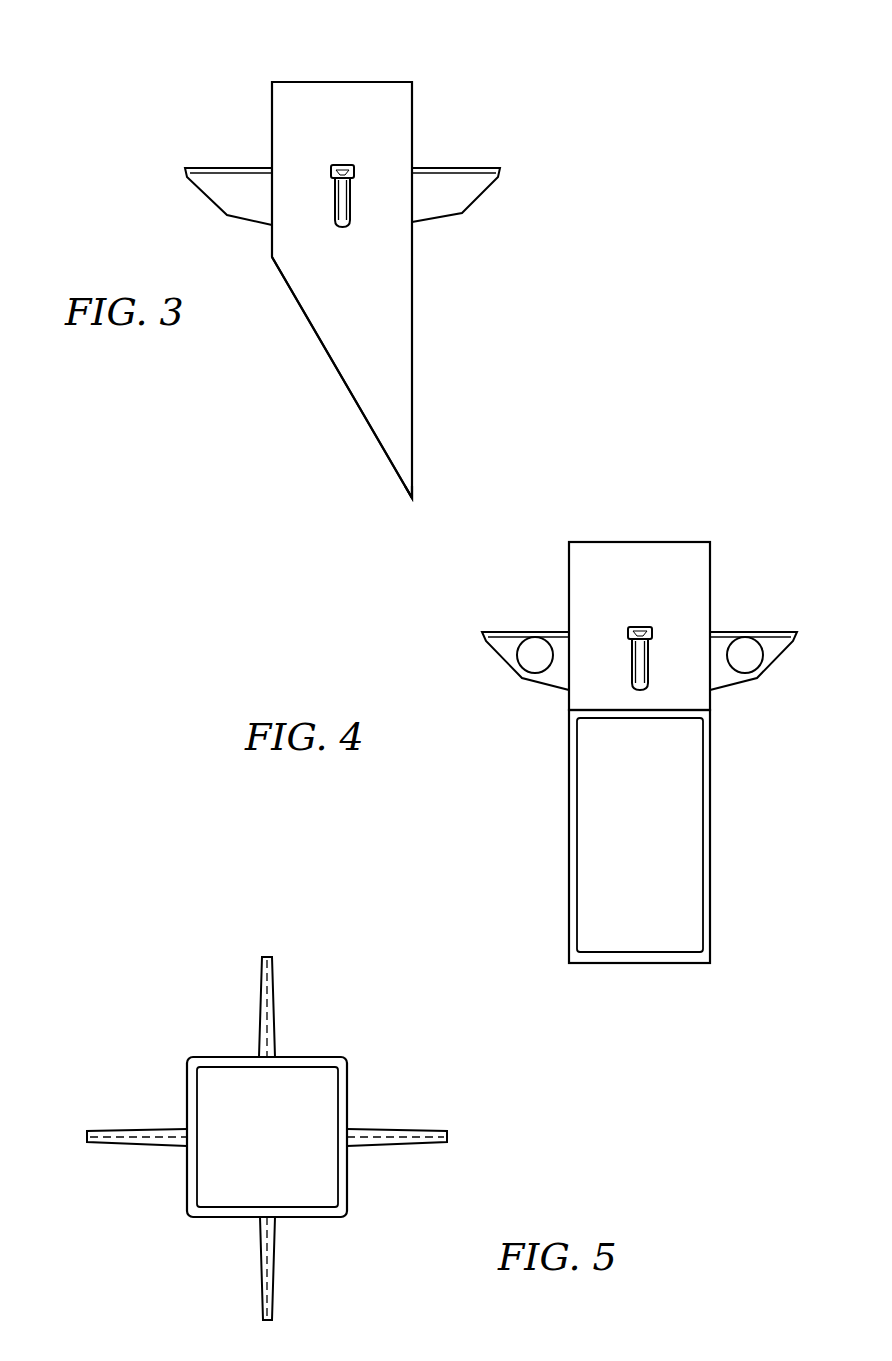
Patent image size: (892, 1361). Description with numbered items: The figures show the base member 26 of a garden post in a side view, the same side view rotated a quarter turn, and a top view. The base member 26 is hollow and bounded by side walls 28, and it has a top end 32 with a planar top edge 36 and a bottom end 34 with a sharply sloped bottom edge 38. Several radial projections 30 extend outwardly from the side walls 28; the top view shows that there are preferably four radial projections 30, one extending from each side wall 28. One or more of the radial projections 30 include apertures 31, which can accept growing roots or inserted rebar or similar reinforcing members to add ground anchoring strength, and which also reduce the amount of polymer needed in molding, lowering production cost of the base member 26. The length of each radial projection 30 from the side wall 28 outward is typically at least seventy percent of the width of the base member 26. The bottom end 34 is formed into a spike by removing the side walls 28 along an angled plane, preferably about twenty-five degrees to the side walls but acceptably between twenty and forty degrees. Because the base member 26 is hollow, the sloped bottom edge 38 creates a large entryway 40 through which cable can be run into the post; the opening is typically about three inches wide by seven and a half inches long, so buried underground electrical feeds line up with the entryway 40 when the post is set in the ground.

In FIG. 3, the base member 26 is at (187, 117).
In FIG. 4, the base member 26 is at (517, 790).
In FIG. 5, the base member 26 is at (168, 1013).
In FIG. 3, the side walls 28 is at (336, 281).
In FIG. 4, the side walls 28 is at (591, 593).
In FIG. 5, the side walls 28 is at (343, 1088).
In FIG. 3, the radial projections 30 is at (472, 183).
In FIG. 4, the radial projections 30 is at (498, 642).
In FIG. 5, the radial projections 30 is at (262, 973).
In FIG. 4, the apertures 31 is at (542, 663).
In FIG. 3, the top end 32 is at (387, 80).
In FIG. 4, the top end 32 is at (683, 542).
In FIG. 3, the bottom end 34 is at (410, 500).
In FIG. 4, the bottom end 34 is at (633, 963).
In FIG. 3, the planar top edge 36 is at (305, 75).
In FIG. 4, the planar top edge 36 is at (640, 658).
In FIG. 3, the sloped bottom edge 38 is at (327, 357).
In FIG. 4, the entryway 40 is at (643, 823).